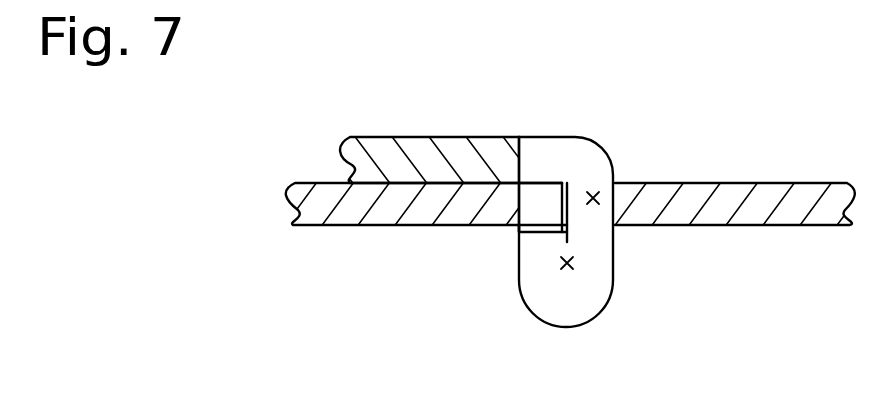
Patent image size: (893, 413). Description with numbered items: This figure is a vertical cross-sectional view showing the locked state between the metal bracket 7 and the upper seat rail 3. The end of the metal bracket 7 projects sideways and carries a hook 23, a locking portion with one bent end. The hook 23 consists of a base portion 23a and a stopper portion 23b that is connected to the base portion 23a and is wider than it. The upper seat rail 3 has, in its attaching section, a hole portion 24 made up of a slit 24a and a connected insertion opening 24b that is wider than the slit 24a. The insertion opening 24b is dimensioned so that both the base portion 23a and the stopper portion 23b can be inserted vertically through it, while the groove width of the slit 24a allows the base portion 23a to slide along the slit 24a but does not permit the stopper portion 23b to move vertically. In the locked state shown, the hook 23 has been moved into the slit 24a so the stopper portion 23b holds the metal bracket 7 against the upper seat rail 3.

The metal bracket 7 is at (403, 140).
The upper seat rail 3 is at (815, 192).
The hook 23 is at (622, 253).
The base portion 23a is at (594, 192).
The stopper portion 23b is at (569, 272).
The hole portion 24 is at (552, 205).
The slit 24a is at (569, 186).
The insertion opening 24b is at (528, 233).